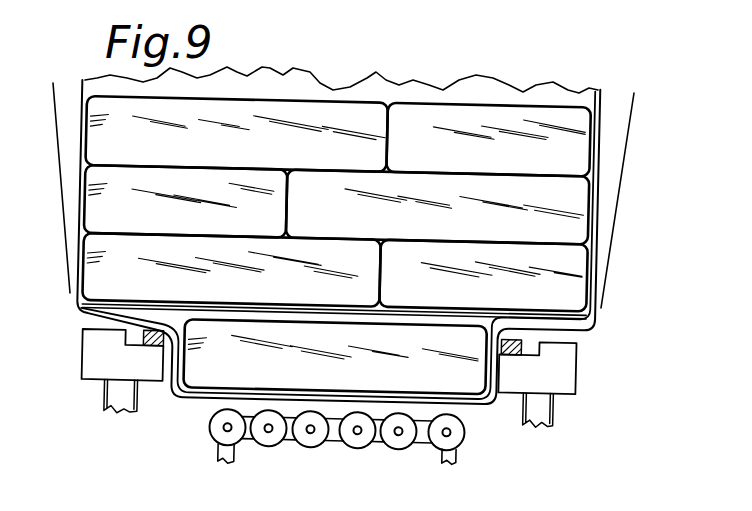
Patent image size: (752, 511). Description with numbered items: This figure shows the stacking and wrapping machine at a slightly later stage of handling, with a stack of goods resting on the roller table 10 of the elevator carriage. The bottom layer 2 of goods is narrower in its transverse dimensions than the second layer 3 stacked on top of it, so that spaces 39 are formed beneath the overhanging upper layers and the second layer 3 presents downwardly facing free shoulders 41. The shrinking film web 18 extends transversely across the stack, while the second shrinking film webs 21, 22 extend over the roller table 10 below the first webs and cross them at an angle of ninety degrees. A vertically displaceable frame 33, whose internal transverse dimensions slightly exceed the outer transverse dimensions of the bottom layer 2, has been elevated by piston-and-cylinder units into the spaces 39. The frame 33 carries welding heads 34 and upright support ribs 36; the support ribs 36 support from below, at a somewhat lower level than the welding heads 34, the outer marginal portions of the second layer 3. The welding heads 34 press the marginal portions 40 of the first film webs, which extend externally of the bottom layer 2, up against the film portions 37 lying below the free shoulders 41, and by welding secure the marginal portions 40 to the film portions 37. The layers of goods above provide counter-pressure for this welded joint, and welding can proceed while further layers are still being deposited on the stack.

The bottom layer of goods 2 is at (347, 380).
The second layer of goods 3 is at (322, 287).
The roller table 10 is at (438, 450).
The shrinking film web 18 is at (298, 88).
The shrinking film web 21 is at (55, 134).
The shrinking film web 22 is at (631, 140).
The vertically displaceable frame 33 is at (122, 360).
The welding head 34 is at (153, 340).
The upright support rib 36 is at (103, 340).
The film portion 37 is at (105, 302).
The space 39 is at (100, 325).
The marginal portion of film web 40 is at (173, 325).
The downwardly facing free shoulder 41 is at (138, 303).